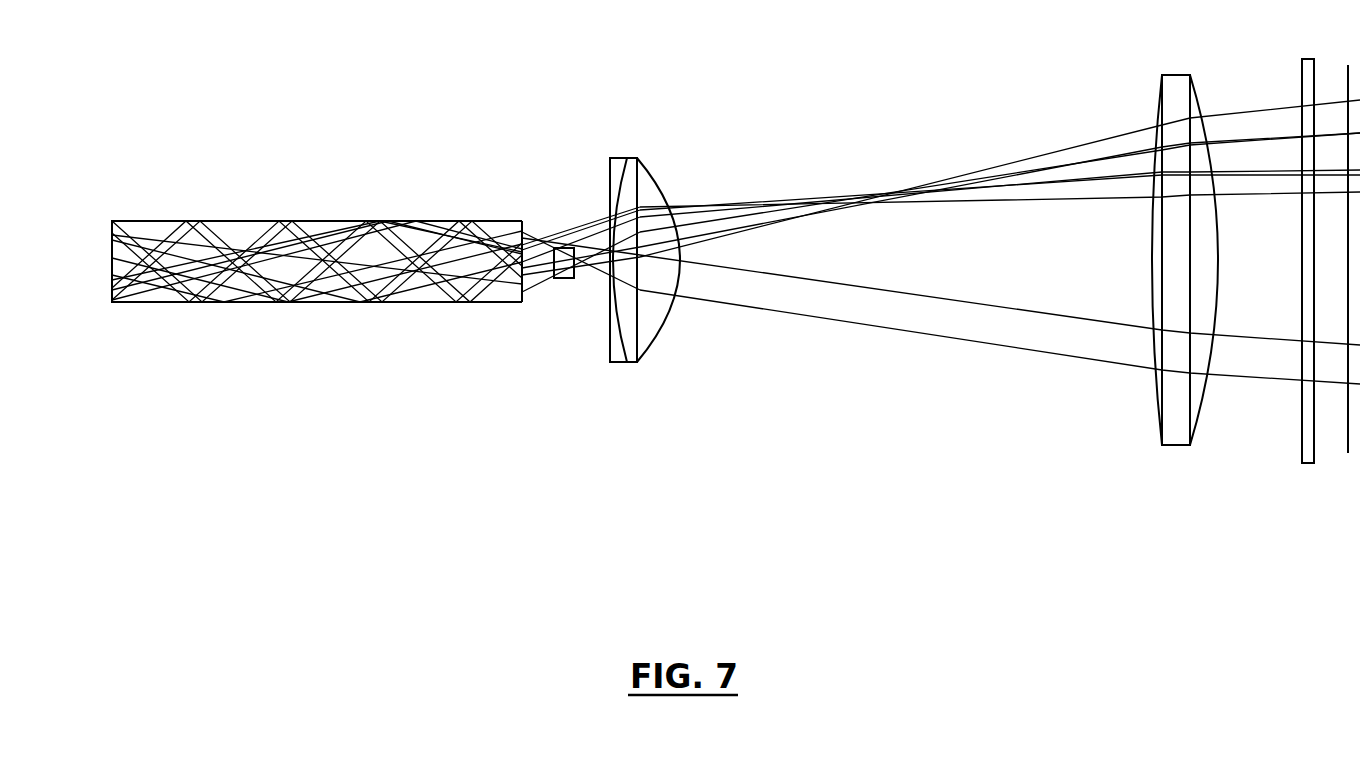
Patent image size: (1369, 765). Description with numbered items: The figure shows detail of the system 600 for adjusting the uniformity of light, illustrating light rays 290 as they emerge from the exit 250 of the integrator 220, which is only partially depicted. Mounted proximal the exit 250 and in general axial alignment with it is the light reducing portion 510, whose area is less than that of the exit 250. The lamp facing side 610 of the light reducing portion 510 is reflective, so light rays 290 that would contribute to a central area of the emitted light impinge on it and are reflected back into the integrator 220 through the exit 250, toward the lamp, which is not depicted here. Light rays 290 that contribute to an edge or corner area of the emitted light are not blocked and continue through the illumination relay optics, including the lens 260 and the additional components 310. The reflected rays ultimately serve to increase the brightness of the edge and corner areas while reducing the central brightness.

The system 600 is at (290, 540).
The integrator 220 is at (313, 220).
The exit 250 is at (537, 219).
The lamp facing side 610 is at (572, 275).
The light reducing portion 510 is at (578, 305).
The lens 260 is at (620, 157).
The light rays 290 is at (551, 203).
The additional components 310 is at (1360, 497).